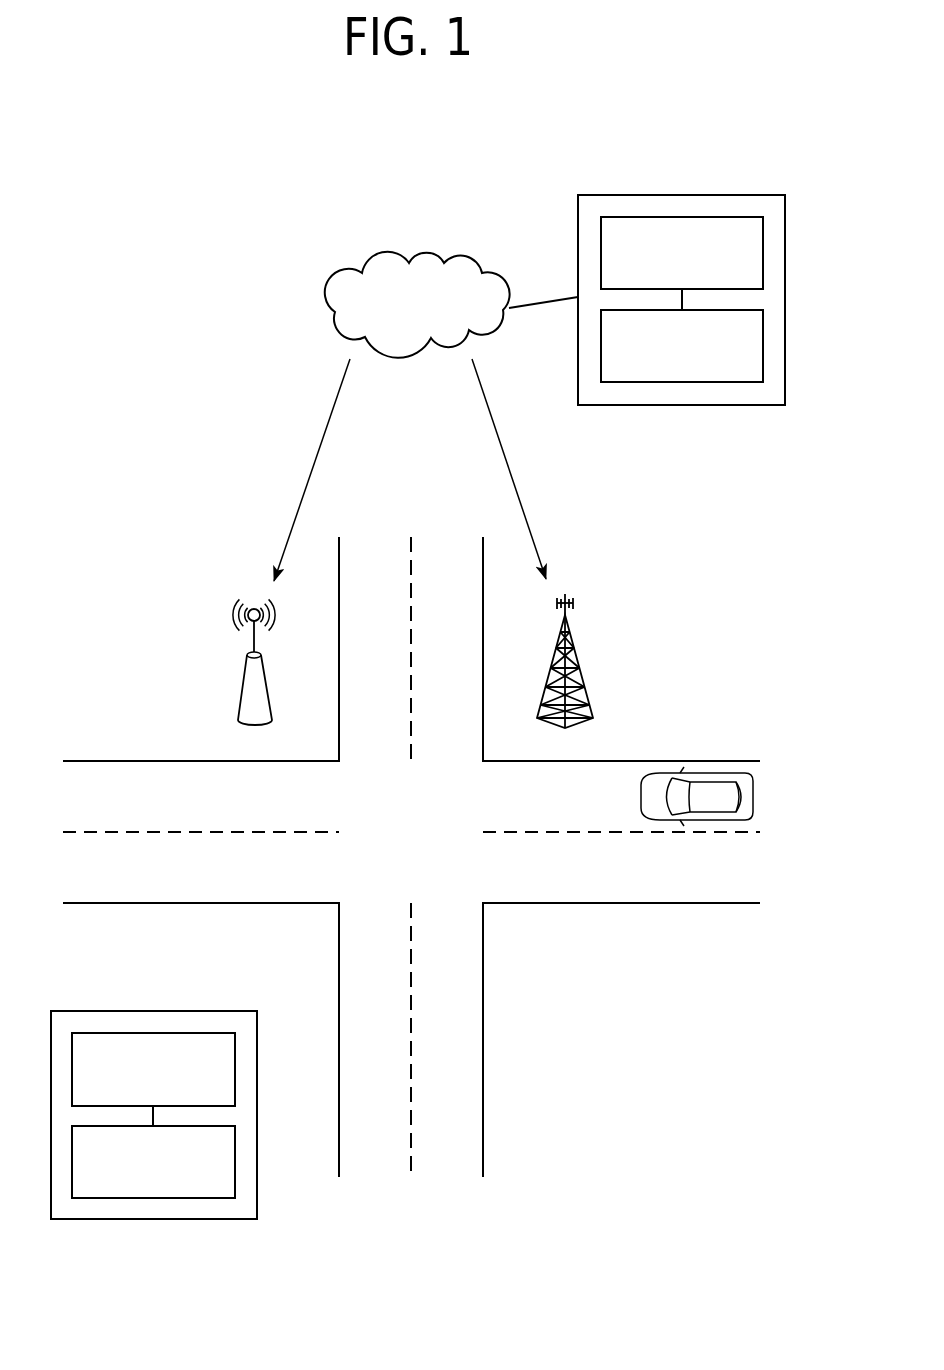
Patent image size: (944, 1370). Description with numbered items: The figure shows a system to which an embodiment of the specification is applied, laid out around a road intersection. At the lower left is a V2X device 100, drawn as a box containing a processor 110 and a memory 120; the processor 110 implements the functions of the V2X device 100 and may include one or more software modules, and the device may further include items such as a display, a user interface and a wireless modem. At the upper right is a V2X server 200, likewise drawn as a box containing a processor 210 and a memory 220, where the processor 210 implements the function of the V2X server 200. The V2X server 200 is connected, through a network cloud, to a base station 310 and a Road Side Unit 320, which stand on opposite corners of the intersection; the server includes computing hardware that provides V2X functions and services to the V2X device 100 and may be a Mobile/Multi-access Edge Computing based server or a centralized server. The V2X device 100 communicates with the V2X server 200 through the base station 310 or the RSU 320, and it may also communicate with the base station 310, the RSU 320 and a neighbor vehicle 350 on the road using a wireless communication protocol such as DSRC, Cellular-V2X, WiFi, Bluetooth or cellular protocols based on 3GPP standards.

The V2X device 100 is at (153, 1011).
The processor 110 is at (235, 1069).
The memory 120 is at (235, 1161).
The V2X server 200 is at (682, 195).
The processor 210 is at (763, 253).
The memory 220 is at (763, 345).
The base station 310 is at (580, 665).
The Road Side Unit (RSU) 320 is at (242, 674).
The neighbor vehicle 350 is at (694, 773).